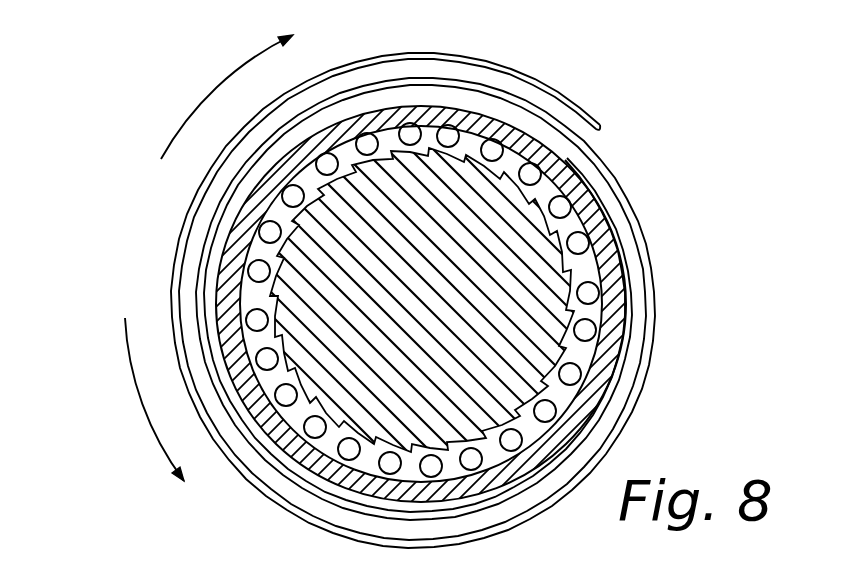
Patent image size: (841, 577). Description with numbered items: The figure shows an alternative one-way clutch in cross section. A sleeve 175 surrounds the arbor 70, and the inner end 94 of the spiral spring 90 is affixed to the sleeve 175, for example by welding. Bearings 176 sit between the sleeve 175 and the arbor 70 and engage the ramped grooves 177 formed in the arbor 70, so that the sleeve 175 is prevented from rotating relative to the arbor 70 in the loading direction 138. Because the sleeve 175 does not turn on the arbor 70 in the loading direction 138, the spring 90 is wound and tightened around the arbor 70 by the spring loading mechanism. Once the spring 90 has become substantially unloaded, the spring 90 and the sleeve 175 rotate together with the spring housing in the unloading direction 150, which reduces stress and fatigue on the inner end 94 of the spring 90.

The arbor 70 is at (492, 210).
The spring 90 is at (643, 370).
The inner end of the spring 94 is at (628, 330).
The sleeve 175 is at (613, 273).
The bearings 176 is at (604, 226).
The ramped grooves 177 is at (556, 195).
The loading direction 138 is at (232, 72).
The unloading direction 150 is at (140, 400).